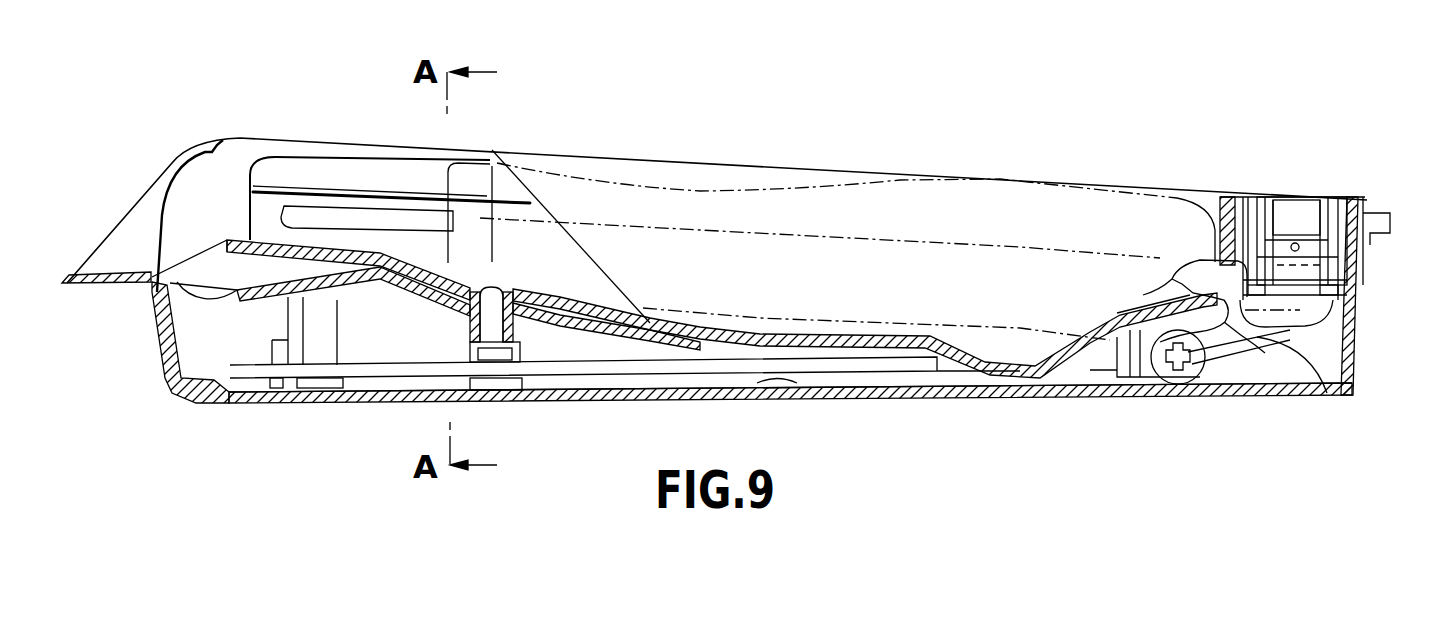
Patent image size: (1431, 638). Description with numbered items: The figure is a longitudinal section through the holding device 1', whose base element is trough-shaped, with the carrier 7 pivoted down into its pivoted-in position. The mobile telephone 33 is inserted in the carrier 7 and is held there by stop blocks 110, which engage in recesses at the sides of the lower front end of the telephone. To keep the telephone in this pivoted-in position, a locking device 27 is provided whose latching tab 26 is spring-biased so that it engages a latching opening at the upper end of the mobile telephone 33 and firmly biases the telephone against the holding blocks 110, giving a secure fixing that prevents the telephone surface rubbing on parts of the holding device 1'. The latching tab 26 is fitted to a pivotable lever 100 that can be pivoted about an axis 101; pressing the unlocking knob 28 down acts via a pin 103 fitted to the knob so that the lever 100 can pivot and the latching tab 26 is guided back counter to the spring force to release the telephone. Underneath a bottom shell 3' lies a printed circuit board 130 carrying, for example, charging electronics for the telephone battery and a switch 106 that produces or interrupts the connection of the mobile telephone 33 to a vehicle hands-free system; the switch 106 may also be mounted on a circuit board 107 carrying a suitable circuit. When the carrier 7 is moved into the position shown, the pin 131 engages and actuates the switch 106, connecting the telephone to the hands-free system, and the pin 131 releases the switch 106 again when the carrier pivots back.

The holding device 1' is at (726, 227).
The carrier 7 is at (240, 150).
The mobile telephone 33 is at (903, 188).
The bottom shell 3' is at (876, 308).
The stop blocks 110 is at (453, 223).
The pin 131 is at (470, 328).
The printed circuit board 130 is at (690, 378).
The switch 106 is at (542, 395).
The latching tab 26 is at (1188, 277).
The locking device 27 is at (1259, 168).
The unlocking knob 28 is at (1327, 197).
The pin 103 is at (1357, 303).
The pivotable lever 100 is at (1228, 342).
The axis 101 is at (1170, 372).
The printed circuit board 107 is at (1322, 395).